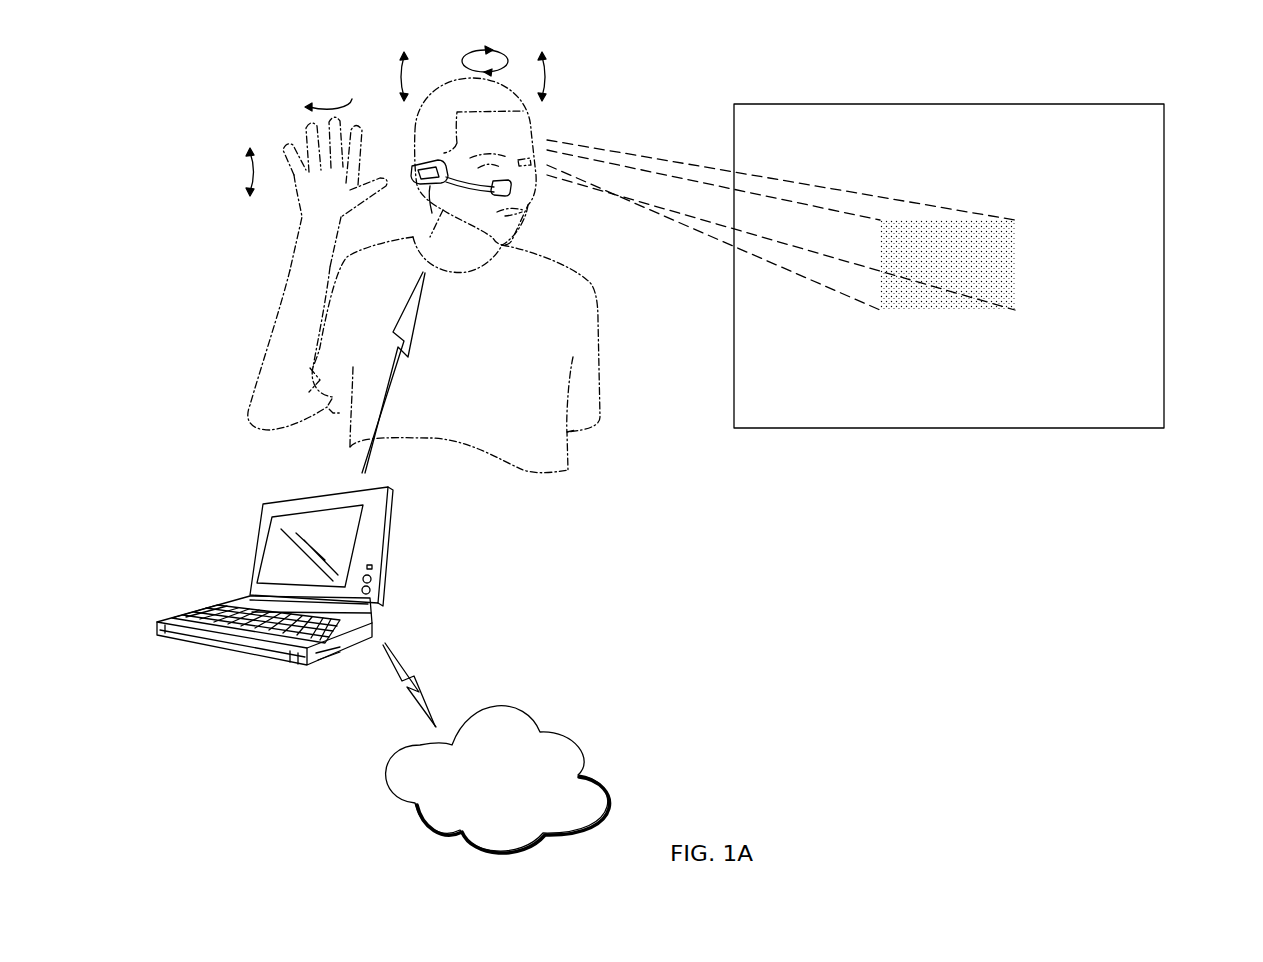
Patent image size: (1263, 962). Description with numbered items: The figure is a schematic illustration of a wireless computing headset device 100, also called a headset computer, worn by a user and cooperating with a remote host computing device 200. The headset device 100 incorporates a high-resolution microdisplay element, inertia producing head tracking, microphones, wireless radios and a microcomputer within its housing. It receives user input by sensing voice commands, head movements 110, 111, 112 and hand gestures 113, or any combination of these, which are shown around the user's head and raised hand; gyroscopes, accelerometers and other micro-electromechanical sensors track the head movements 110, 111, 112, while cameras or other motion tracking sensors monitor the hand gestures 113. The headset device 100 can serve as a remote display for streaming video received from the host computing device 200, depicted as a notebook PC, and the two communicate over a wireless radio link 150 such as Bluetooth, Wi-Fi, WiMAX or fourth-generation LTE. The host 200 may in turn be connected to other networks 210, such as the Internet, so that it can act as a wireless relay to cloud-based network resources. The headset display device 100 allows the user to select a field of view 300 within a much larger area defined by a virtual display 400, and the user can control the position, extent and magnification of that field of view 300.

The wireless computing headset device 100 is at (443, 187).
The head movement 110 is at (462, 62).
The head movement 111 is at (544, 76).
The head movement 112 is at (402, 75).
The hand gestures 113 is at (247, 171).
The wireless radio link 150 is at (387, 397).
The remote host computing device 200 is at (389, 543).
The other networks 210 is at (581, 759).
The field of view 300 is at (1015, 263).
The virtual display 400 is at (830, 429).